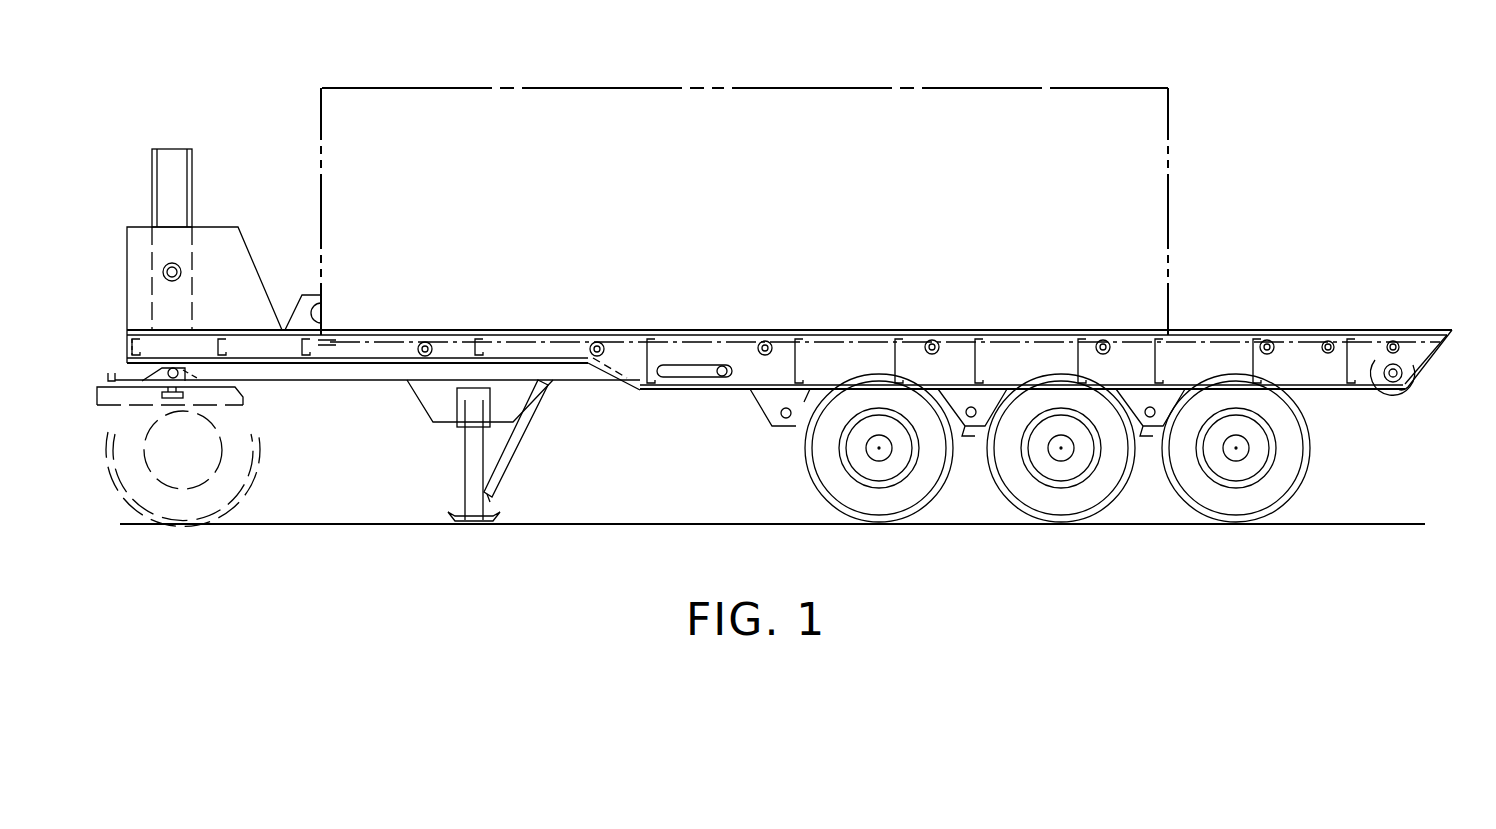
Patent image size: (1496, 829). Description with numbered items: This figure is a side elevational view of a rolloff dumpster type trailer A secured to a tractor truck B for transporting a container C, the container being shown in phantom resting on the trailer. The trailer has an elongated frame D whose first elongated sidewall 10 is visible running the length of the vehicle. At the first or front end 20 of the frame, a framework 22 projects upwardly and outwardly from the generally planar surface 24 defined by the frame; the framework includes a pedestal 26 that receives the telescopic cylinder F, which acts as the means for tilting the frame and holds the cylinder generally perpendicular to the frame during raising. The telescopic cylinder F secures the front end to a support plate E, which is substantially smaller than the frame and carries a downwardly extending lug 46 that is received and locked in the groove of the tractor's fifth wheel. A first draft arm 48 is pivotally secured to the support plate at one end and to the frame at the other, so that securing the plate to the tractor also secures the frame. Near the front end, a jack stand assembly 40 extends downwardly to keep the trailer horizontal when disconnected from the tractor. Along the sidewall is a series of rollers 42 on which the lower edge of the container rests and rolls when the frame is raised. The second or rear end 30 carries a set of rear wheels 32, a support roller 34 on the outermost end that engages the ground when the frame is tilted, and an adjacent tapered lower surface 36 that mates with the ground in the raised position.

The trailer A is at (987, 78).
The tractor truck B is at (268, 455).
The container C is at (593, 145).
The elongated frame D is at (1298, 352).
The support plate E is at (133, 378).
The telescopic cylinder F is at (172, 178).
The first elongated sidewall 10 is at (289, 345).
The first or front end 20 is at (270, 284).
The framework 22 is at (233, 250).
The generally planar surface 24 is at (715, 330).
The pedestal 26 is at (178, 211).
The second or rear end 30 is at (1197, 352).
The rear wheels 32 is at (822, 462).
The support roller 34 is at (1410, 392).
The tapered lower surface 36 is at (1440, 350).
The jack stand assembly 40 is at (468, 450).
The rollers 42 is at (428, 343).
The downwardly extending lug 46 is at (177, 399).
The first draft arm 48 is at (374, 393).